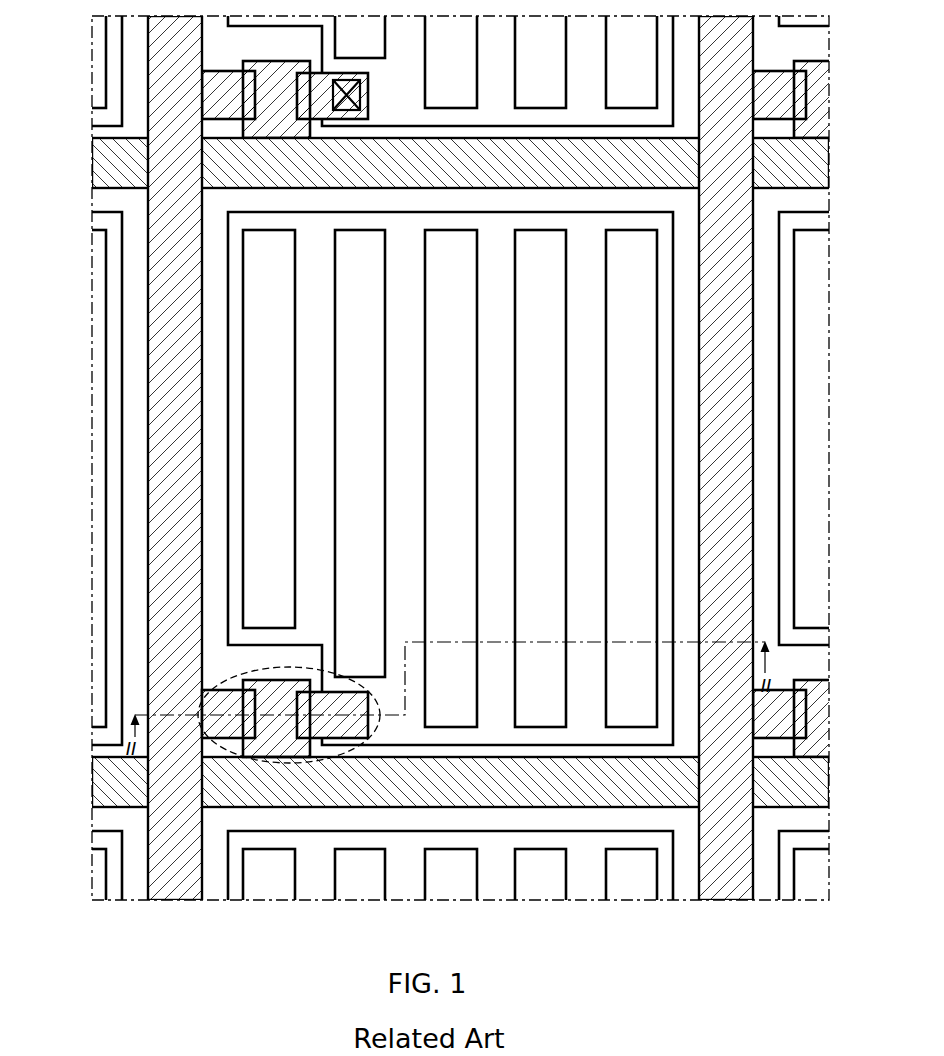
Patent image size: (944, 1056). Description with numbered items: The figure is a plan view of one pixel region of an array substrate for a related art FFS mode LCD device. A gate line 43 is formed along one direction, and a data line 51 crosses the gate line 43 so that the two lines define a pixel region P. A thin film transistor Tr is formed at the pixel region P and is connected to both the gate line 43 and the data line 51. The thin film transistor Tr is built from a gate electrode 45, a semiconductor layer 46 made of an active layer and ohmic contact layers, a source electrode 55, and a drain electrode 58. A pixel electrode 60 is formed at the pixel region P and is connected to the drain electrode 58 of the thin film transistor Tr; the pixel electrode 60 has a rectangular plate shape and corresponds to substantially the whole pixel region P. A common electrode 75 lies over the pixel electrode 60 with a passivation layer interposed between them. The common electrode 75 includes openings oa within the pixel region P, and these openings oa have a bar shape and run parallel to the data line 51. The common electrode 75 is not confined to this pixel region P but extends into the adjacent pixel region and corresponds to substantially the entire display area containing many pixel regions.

The gate line 43 is at (562, 793).
The gate electrode 45 is at (285, 680).
The semiconductor layer 46 is at (277, 723).
The data line 51 is at (157, 340).
The source electrode 55 is at (230, 720).
The drain electrode 58 is at (313, 735).
The pixel electrode 60 is at (218, 292).
The common electrode 75 is at (313, 437).
The openings oa is at (269, 405).
The pixel region P is at (211, 509).
The thin film transistor Tr is at (357, 748).